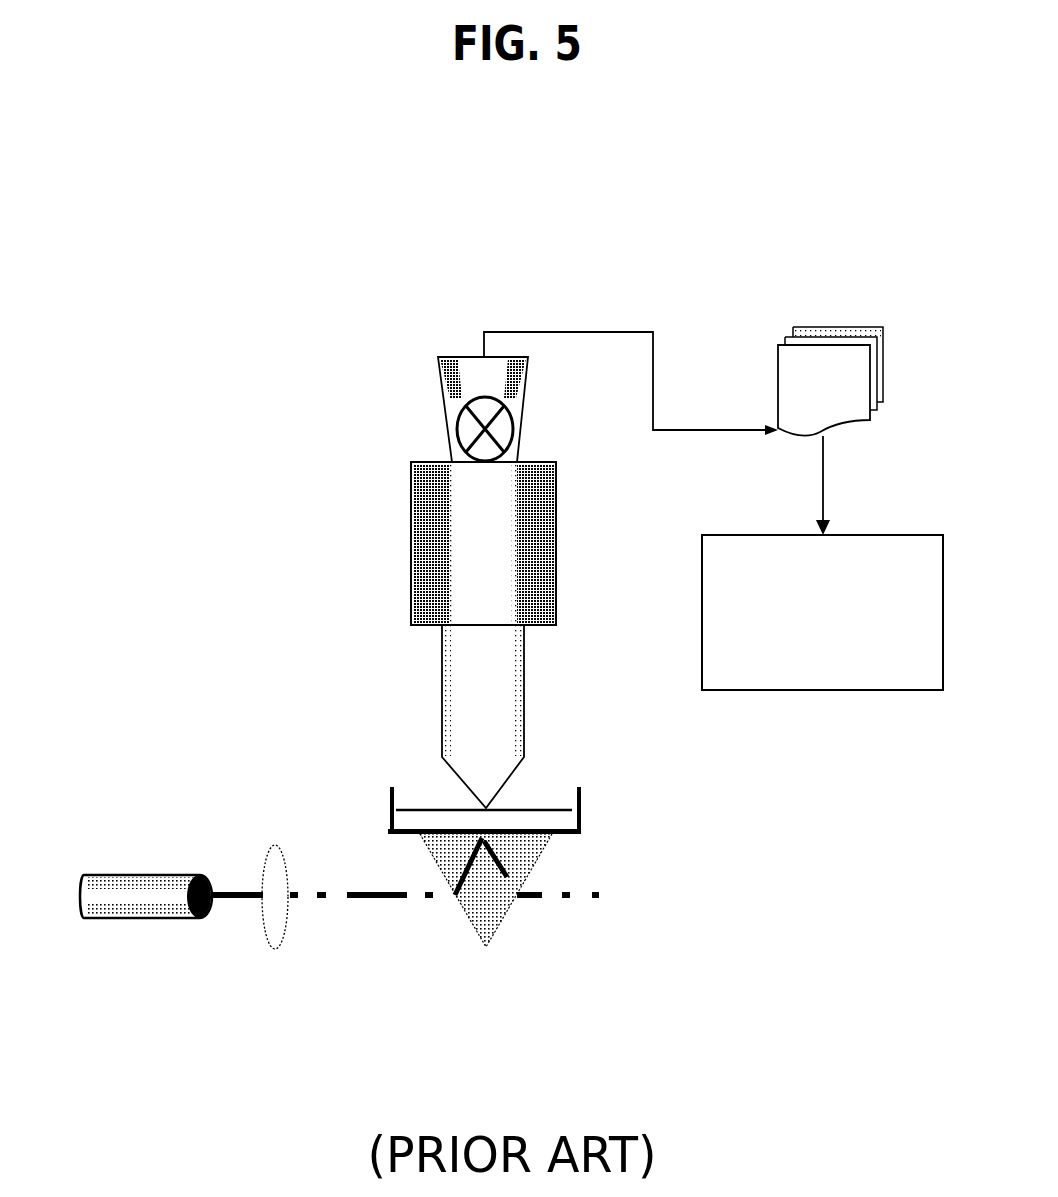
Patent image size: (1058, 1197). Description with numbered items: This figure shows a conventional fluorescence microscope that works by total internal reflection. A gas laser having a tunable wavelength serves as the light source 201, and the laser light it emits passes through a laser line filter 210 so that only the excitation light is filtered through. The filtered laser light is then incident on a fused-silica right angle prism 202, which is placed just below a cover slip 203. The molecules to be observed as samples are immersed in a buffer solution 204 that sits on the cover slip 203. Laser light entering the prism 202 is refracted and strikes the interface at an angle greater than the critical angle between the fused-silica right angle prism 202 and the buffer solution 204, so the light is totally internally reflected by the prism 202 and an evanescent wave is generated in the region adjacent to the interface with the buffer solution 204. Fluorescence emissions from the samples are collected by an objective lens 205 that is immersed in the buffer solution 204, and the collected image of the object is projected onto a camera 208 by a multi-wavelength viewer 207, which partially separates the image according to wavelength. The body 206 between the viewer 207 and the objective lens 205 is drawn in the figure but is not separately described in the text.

The light source 201 is at (127, 875).
The fused-silica right angle prism 202 is at (498, 920).
The cover slip 203 is at (583, 825).
The buffer solution 204 is at (427, 792).
The objective lens 205 is at (525, 697).
The transducer body 206 is at (410, 530).
The multi-wavelength viewer 207 is at (515, 450).
The camera 208 is at (468, 355).
The laser line filter 210 is at (278, 845).